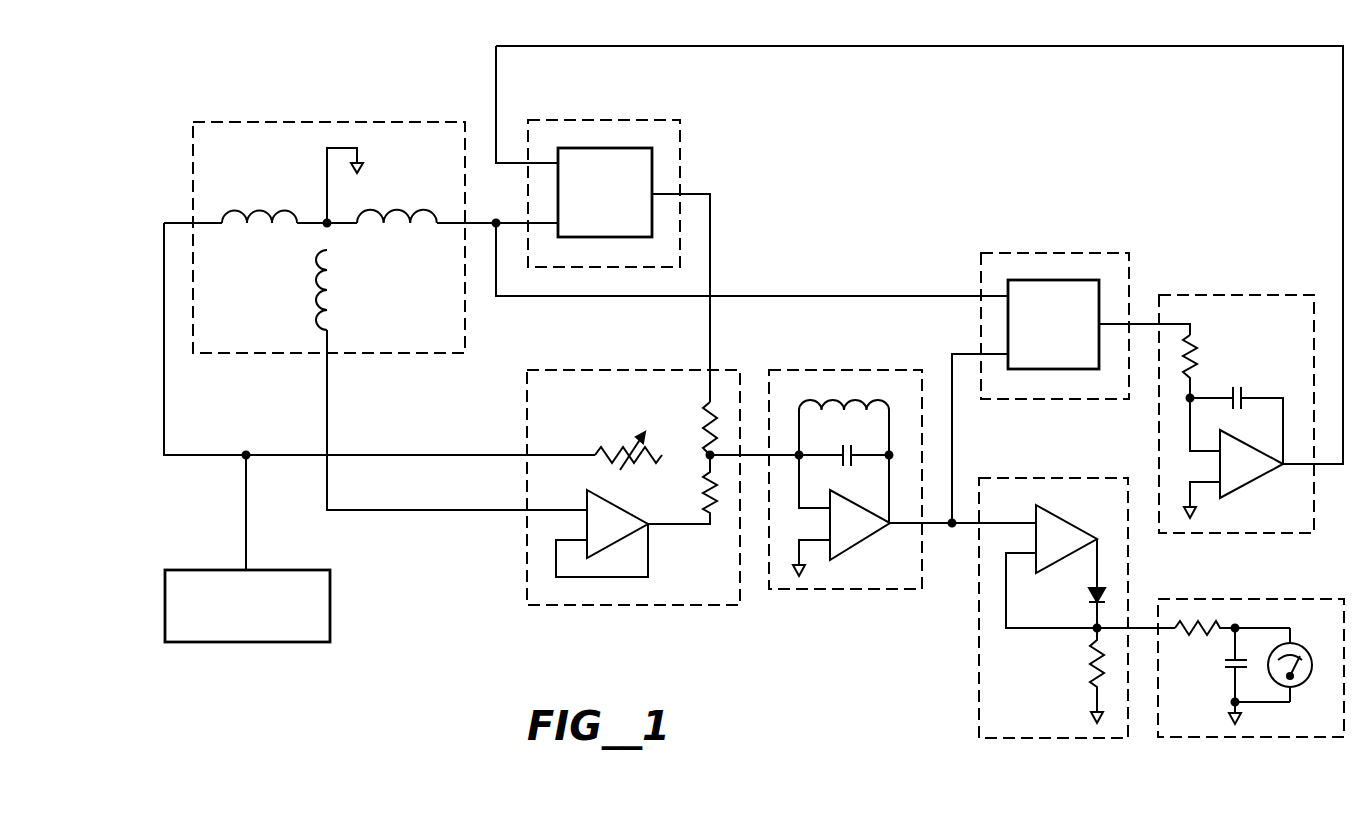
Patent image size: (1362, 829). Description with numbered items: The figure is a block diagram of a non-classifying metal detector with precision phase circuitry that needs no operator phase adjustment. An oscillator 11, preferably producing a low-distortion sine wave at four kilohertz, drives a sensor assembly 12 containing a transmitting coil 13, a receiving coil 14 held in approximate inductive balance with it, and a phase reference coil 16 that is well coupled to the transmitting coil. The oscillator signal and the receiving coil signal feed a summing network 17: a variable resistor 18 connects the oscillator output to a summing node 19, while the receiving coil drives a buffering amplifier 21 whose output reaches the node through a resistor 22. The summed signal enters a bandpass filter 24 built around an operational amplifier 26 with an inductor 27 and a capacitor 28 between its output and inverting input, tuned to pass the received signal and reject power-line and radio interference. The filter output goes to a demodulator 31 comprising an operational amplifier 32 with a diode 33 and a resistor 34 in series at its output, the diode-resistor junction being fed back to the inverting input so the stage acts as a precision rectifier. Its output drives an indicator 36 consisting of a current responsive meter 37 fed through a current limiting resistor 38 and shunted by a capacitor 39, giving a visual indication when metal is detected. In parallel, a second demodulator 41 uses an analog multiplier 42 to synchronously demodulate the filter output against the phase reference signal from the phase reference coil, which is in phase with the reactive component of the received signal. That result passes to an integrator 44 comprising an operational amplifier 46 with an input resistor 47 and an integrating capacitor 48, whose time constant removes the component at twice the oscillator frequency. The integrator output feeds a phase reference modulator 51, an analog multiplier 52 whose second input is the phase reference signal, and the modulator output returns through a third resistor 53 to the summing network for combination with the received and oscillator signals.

The oscillator 11 is at (293, 643).
The sensor assembly 12 is at (364, 352).
The transmitting coil 13 is at (268, 216).
The receiving coil 14 is at (314, 290).
The phase reference coil 16 is at (392, 216).
The summing network 17 is at (528, 553).
The variable resistor 18 is at (608, 448).
The summing node 19 is at (708, 452).
The buffering amplifier 21 is at (620, 527).
The resistor 22 is at (703, 475).
The bandpass filter 24 is at (818, 590).
The operational amplifier 26 is at (855, 528).
The inductor 27 is at (858, 405).
The capacitor 28 is at (840, 460).
The demodulator 31 is at (980, 641).
The operational amplifier 32 is at (1063, 530).
The diode 33 is at (1090, 593).
The resistor 34 is at (1093, 660).
The indicator 36 is at (1345, 598).
The current responsive meter 37 is at (1302, 652).
The current limiting resistor 38 is at (1203, 635).
The capacitor 39 is at (1232, 672).
The second demodulator 41 is at (981, 268).
The analog multiplier 42 is at (1006, 328).
The integrator 44 is at (1315, 476).
The operational amplifier 46 is at (1248, 470).
The input resistor 47 is at (1196, 350).
The integrating capacitor 48 is at (1240, 394).
The phase reference modulator 51 is at (681, 168).
The analog multiplier 52 is at (655, 218).
The third resistor 53 is at (710, 404).